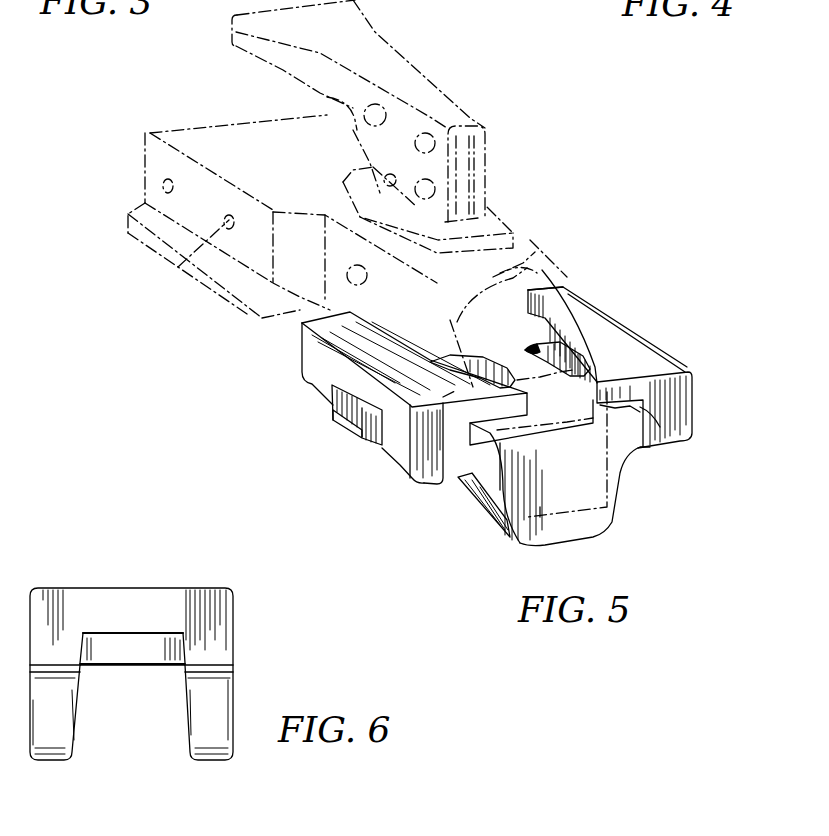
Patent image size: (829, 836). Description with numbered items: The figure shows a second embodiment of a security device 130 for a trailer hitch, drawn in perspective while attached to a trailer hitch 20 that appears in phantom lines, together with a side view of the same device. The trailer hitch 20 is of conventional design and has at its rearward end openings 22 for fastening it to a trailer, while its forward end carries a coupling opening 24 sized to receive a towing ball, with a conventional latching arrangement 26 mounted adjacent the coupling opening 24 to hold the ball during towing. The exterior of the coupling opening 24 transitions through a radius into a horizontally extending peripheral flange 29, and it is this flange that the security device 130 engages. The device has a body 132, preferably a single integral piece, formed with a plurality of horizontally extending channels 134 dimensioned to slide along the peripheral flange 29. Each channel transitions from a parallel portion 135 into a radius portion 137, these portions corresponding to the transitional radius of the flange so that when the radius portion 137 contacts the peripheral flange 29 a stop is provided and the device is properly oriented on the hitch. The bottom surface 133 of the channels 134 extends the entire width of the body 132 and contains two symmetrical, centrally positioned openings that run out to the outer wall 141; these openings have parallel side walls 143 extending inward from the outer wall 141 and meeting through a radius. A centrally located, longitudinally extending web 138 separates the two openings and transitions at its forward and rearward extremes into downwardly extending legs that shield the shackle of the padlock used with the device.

In FIG. 5, the trailer hitch 20 is at (516, 200).
In FIG. 5, the openings 22 is at (158, 183).
In FIG. 5, the coupling opening 24 is at (535, 247).
In FIG. 5, the latching arrangement 26 is at (443, 72).
In FIG. 5, the horizontally extending peripheral flange 29 is at (288, 327).
In FIG. 5, the security device 130 is at (702, 305).
In FIG. 5, the body 132 is at (643, 504).
In FIG. 6, the body 132 is at (246, 708).
In FIG. 5, the bottom surface 133 is at (640, 407).
In FIG. 5, the horizontally extending channels 134 is at (617, 403).
In FIG. 5, the parallel portion 135 is at (428, 358).
In FIG. 5, the radius portion 137 is at (465, 370).
In FIG. 5, the longitudinally extending web 138 is at (513, 360).
In FIG. 6, the longitudinally extending web 138 is at (133, 638).
In FIG. 5, the outer wall 141 is at (300, 369).
In FIG. 6, the outer wall 141 is at (227, 640).
In FIG. 5, the parallel side walls 143 is at (455, 364).